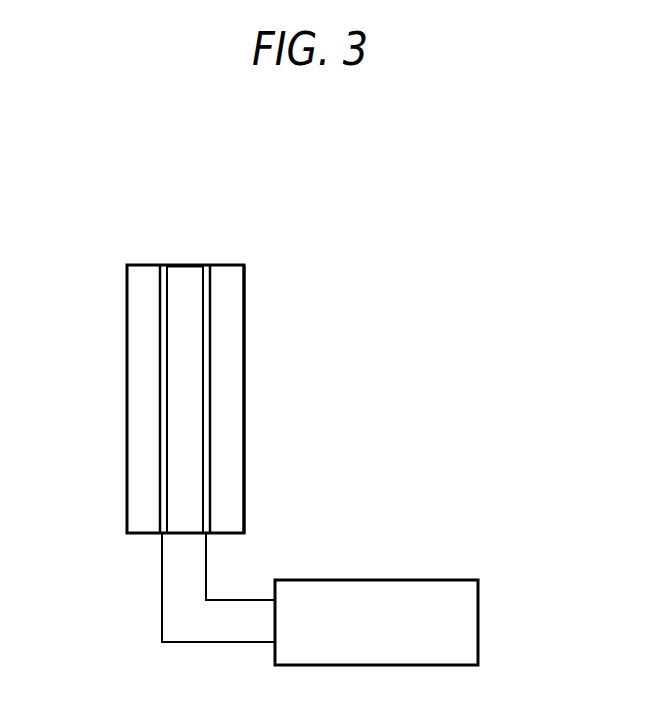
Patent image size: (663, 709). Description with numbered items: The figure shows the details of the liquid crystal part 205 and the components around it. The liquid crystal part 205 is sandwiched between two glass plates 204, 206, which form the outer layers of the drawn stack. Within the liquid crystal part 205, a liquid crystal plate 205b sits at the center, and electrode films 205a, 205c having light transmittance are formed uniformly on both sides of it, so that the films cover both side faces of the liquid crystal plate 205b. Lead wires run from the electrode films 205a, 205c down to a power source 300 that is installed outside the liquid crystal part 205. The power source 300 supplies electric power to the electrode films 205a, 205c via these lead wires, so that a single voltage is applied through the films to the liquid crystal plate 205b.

The glass plate 204 is at (140, 290).
The liquid crystal part 205 is at (297, 180).
The electrode film 205a is at (163, 265).
The liquid crystal plate 205b is at (183, 277).
The electrode film 205c is at (207, 265).
The glass plate 206 is at (230, 290).
The power source 300 is at (478, 618).